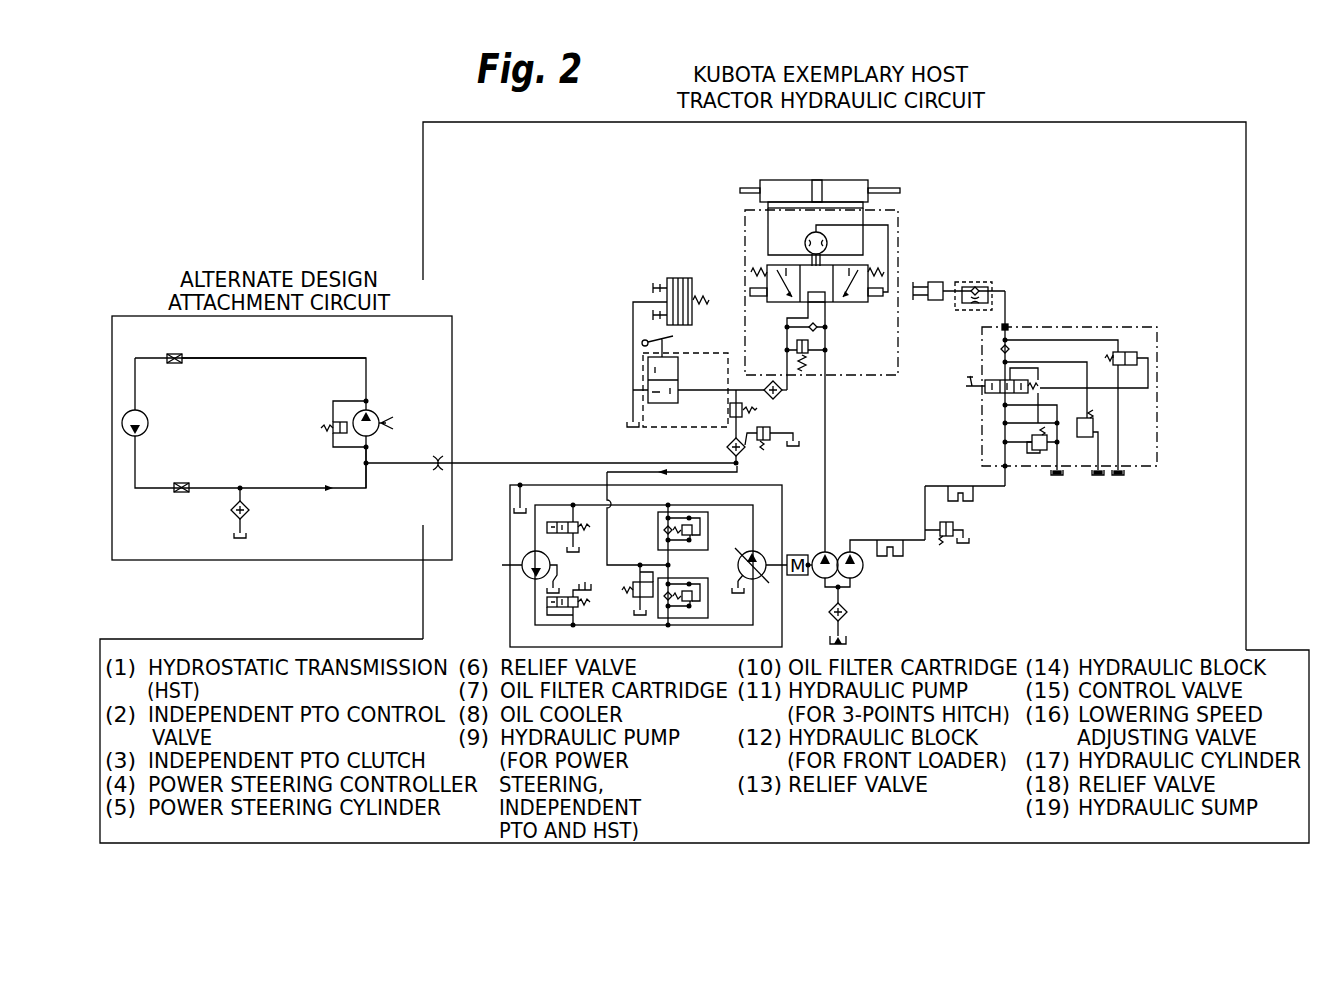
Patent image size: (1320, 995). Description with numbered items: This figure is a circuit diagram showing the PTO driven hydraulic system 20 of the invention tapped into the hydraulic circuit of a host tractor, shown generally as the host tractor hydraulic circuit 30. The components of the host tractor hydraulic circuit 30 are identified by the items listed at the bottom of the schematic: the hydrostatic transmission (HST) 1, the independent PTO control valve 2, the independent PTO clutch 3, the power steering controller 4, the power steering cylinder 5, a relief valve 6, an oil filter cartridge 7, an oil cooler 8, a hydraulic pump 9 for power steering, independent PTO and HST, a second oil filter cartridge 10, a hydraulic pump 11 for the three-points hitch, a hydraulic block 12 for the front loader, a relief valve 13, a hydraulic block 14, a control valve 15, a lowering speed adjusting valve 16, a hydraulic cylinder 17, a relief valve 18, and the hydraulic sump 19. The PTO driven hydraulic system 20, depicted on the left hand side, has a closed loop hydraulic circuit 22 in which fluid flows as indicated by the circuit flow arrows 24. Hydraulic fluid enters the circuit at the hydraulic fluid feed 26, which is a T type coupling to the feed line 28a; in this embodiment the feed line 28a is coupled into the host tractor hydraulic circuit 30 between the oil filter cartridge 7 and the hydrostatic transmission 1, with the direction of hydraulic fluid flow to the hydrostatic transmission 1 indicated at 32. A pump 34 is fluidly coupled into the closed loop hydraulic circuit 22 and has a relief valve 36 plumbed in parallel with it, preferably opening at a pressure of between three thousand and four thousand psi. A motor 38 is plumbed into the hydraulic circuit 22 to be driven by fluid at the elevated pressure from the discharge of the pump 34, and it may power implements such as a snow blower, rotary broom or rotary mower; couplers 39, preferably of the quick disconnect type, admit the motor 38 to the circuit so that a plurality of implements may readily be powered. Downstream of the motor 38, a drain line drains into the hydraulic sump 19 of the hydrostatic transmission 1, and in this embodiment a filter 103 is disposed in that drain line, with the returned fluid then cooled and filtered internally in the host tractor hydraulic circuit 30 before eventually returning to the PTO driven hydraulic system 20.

The hydrostatic transmission 1 is at (510, 512).
The independent PTO control valve 2 is at (643, 379).
The independent PTO clutch 3 is at (669, 276).
The power steering controller 4 is at (745, 263).
The power steering cylinder 5 is at (756, 196).
The relief valve 6 is at (724, 406).
The oil filter cartridge 7 is at (747, 450).
The oil cooler 8 is at (783, 397).
The hydraulic pump 9 is at (825, 578).
The oil filter cartridge 10 is at (847, 612).
The hydraulic pump 11 is at (860, 574).
The hydraulic block 12 is at (900, 557).
The relief valve 13 is at (951, 538).
The hydraulic block 14 is at (972, 497).
The control valve 15 is at (1073, 327).
The lowering speed adjusting valve 16 is at (983, 285).
The hydraulic cylinder 17 is at (933, 282).
The relief valve 18 is at (771, 439).
The hydraulic sump 19 is at (233, 541).
The PTO driven hydraulic system 20 is at (195, 255).
The closed loop hydraulic circuit 22 is at (215, 356).
The circuit flow arrows 24 is at (292, 359).
The hydraulic fluid feed 26 is at (364, 463).
The feed line 28a is at (568, 462).
The host tractor hydraulic circuit 30 is at (483, 120).
The direction of hydraulic fluid flow 32 is at (666, 470).
The pump 34 is at (373, 412).
The relief valve 36 is at (327, 426).
The motor 38 is at (149, 426).
The couplers 39 is at (177, 365).
The filter 103 is at (250, 511).